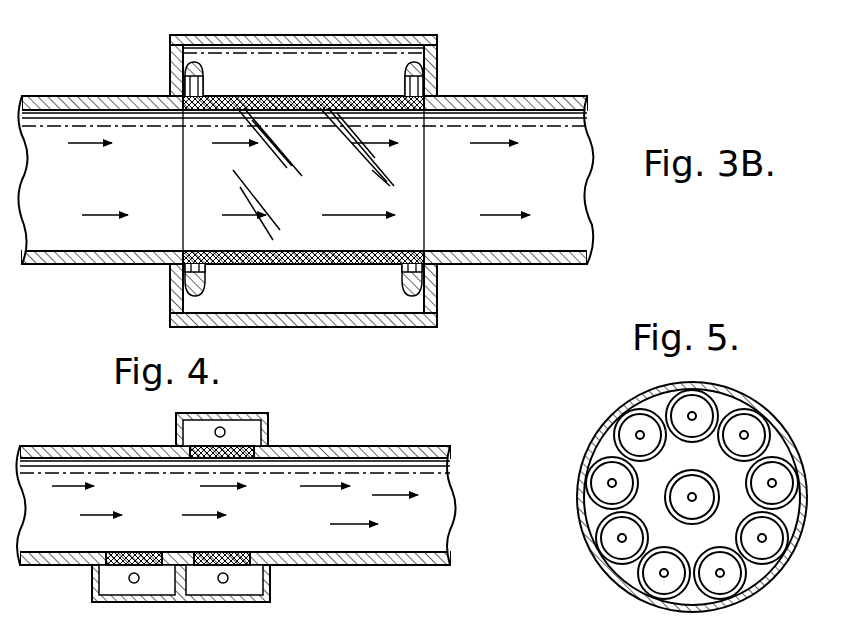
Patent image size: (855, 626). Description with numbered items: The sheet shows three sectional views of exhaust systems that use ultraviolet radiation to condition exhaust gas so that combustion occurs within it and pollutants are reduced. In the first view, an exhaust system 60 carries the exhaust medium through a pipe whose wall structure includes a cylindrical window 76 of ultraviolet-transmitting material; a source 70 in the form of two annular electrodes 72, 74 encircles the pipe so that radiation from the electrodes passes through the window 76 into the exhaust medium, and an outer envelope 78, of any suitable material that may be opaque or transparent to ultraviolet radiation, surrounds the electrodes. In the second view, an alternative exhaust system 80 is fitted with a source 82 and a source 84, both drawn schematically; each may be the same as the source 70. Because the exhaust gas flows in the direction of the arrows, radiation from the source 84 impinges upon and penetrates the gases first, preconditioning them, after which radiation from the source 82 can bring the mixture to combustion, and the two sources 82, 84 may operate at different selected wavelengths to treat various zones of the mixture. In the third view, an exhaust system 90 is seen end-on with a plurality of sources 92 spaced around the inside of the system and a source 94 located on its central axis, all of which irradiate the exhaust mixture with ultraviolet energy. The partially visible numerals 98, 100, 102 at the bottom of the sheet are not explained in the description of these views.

In FIG. 3B, the exhaust system 60 is at (495, 97).
In FIG. 3B, the source 70 is at (440, 45).
In FIG. 3B, the annular electrode 72 is at (180, 280).
In FIG. 3B, the annular electrode 74 is at (432, 277).
In FIG. 3B, the cylindrical window 76 is at (310, 97).
In FIG. 3B, the outer envelope 78 is at (372, 327).
In FIG. 4, the exhaust system 80 is at (395, 446).
In FIG. 4, the source 82 is at (270, 432).
In FIG. 4, the source 84 is at (92, 582).
In FIG. 5, the exhaust system 90 is at (736, 392).
In FIG. 5, the sources 92 is at (772, 443).
In FIG. 5, the source 94 is at (705, 524).
In FIG. 4, the element 98 is at (502, 620).
In FIG. 4, the element 100 is at (423, 620).
In FIG. 4, the element 102 is at (292, 625).